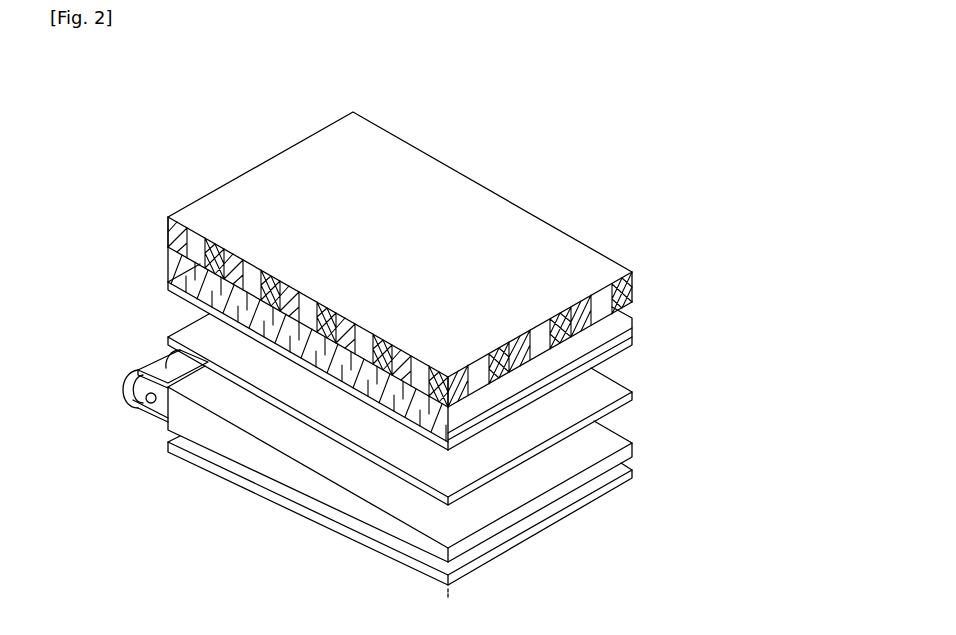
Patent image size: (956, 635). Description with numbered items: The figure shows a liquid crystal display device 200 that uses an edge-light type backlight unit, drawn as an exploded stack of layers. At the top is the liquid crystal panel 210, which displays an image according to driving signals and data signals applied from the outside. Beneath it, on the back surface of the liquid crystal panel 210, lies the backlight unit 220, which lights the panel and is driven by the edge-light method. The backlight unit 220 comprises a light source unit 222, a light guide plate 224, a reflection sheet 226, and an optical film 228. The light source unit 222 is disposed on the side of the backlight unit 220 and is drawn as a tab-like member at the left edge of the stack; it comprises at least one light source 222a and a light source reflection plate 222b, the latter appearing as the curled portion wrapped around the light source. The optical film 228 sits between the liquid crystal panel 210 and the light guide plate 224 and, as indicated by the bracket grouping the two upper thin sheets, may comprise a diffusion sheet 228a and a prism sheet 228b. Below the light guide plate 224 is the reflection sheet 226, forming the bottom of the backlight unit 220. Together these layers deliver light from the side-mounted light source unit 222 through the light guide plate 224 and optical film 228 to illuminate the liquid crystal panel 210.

The liquid crystal display device 200 is at (510, 157).
The liquid crystal panel 210 is at (548, 240).
The backlight unit 220 is at (646, 398).
The light source unit 222 is at (161, 504).
The light source 222a is at (141, 412).
The light source reflection plate 222b is at (131, 393).
The light guide plate 224 is at (606, 434).
The reflection sheet 226 is at (623, 478).
The optical film 228 is at (725, 318).
The diffusion sheet 228a is at (603, 386).
The prism sheet 228b is at (605, 344).